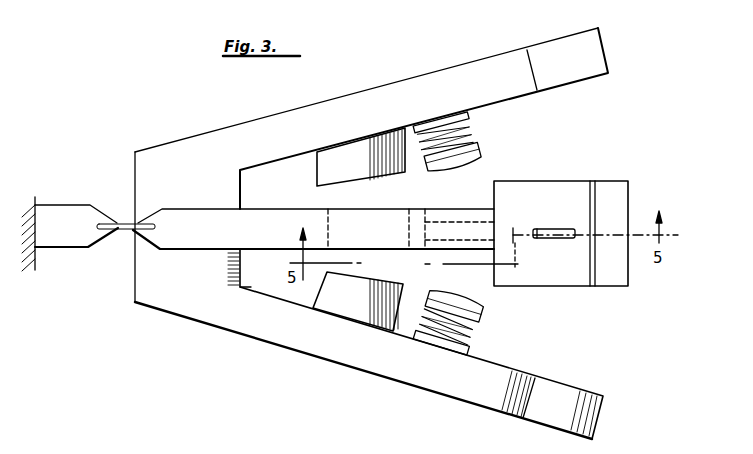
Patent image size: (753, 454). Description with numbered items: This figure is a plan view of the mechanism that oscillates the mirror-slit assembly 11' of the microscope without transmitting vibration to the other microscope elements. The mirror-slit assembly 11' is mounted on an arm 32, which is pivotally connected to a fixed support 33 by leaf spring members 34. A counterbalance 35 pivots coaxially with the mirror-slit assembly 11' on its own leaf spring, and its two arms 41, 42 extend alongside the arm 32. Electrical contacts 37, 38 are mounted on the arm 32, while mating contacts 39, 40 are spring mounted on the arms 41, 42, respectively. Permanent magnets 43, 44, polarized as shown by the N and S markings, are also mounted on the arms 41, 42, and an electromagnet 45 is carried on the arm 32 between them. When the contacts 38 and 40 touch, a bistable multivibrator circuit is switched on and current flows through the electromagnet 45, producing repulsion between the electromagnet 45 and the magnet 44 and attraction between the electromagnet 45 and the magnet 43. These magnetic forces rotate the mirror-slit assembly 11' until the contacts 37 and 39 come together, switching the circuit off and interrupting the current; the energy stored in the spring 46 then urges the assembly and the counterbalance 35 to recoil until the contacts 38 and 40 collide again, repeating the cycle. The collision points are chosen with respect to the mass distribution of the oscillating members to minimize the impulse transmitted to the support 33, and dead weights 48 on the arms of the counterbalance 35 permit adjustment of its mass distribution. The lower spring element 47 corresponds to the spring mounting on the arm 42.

The mirror-slit assembly 11' is at (586, 204).
The arm 32 is at (272, 208).
The support 33 is at (48, 205).
The leaf spring members 34 is at (125, 232).
The counterbalance 35 is at (207, 127).
The electrical contact 37 is at (433, 212).
The electrical contact 38 is at (443, 256).
The contact 39 is at (468, 157).
The contact 40 is at (467, 302).
The arm 41 is at (460, 70).
The arm 42 is at (437, 391).
The permanent magnet 43 is at (365, 172).
The permanent magnet 44 is at (363, 281).
The electromagnet 45 is at (372, 228).
The spring 46 is at (460, 130).
The lower spring 47 is at (462, 328).
The dead weights 48 is at (575, 87).